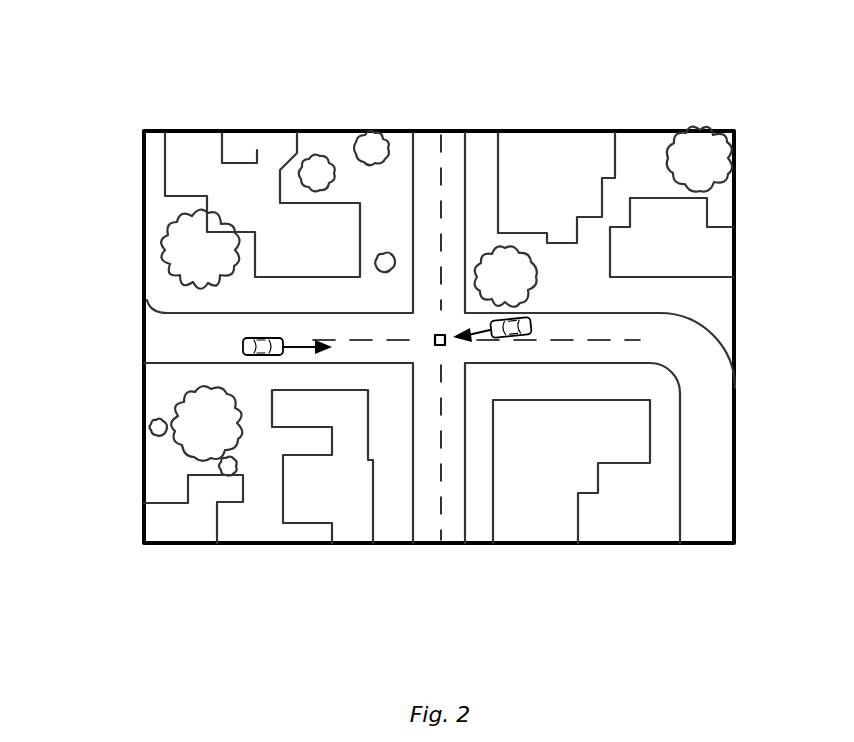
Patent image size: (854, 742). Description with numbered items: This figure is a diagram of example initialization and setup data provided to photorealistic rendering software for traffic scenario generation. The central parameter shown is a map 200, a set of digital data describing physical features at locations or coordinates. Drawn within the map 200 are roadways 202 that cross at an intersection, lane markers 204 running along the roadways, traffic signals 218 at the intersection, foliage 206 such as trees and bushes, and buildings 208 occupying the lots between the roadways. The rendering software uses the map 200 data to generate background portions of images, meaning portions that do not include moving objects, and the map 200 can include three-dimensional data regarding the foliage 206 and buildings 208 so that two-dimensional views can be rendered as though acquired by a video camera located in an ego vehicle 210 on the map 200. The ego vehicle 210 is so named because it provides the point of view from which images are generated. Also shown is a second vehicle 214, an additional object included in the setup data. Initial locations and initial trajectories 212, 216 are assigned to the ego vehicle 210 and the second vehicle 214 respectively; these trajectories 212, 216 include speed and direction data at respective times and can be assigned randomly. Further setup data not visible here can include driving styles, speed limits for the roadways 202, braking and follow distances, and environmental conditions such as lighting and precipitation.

The map 200 is at (203, 130).
The roadways 202 is at (712, 508).
The lane markers 204 is at (442, 488).
The foliage 206 is at (167, 220).
The buildings 208 is at (272, 512).
The ego vehicle 210 is at (240, 345).
The initial trajectory 212 is at (297, 345).
The second vehicle 214 is at (532, 328).
The initial trajectory 216 is at (470, 340).
The traffic signals 218 is at (438, 332).